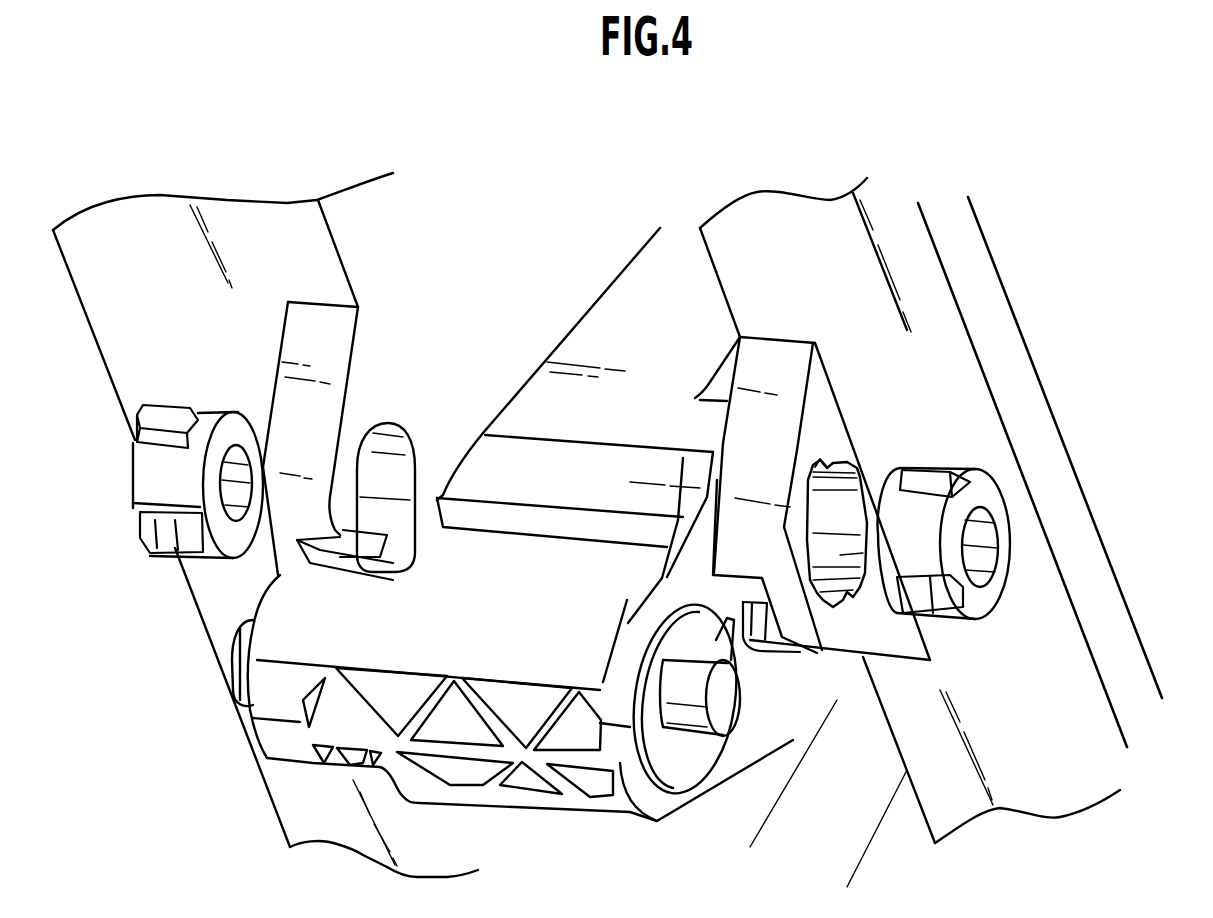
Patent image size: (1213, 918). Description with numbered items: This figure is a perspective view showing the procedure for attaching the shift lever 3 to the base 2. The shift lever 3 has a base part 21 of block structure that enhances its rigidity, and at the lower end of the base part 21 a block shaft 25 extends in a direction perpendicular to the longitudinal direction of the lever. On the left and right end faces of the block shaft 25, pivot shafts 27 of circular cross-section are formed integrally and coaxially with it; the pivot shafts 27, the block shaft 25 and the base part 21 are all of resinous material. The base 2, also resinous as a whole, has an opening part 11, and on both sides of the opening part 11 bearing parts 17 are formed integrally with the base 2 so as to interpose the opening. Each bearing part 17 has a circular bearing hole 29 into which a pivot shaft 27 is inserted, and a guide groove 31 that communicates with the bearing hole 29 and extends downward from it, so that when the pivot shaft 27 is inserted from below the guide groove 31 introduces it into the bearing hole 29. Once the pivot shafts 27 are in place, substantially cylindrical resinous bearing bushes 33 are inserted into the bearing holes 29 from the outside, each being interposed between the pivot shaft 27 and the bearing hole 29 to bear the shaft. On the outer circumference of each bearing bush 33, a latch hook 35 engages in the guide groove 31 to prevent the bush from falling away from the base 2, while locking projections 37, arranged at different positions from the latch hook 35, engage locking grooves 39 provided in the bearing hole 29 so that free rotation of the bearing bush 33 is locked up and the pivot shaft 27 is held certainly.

The base 2 is at (1010, 263).
The shift lever 3 is at (588, 232).
The opening part 11 is at (690, 265).
The bearing part 17 is at (292, 345).
The base part 21 is at (532, 405).
The block shaft 25 is at (330, 640).
The pivot shaft 27 is at (236, 650).
The bearing hole 29 is at (418, 455).
The guide groove 31 is at (280, 575).
The bearing bush 33 is at (135, 477).
The latch hook 35 is at (165, 556).
The locking projection 37 is at (160, 418).
The locking groove 39 is at (830, 470).